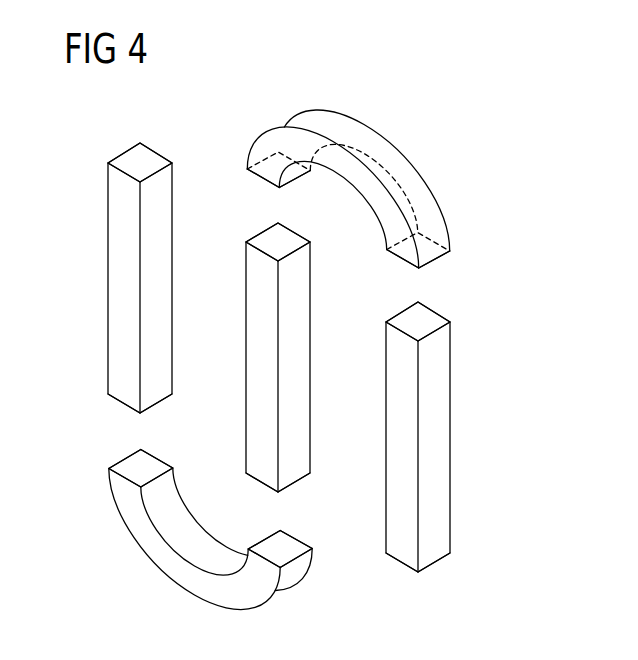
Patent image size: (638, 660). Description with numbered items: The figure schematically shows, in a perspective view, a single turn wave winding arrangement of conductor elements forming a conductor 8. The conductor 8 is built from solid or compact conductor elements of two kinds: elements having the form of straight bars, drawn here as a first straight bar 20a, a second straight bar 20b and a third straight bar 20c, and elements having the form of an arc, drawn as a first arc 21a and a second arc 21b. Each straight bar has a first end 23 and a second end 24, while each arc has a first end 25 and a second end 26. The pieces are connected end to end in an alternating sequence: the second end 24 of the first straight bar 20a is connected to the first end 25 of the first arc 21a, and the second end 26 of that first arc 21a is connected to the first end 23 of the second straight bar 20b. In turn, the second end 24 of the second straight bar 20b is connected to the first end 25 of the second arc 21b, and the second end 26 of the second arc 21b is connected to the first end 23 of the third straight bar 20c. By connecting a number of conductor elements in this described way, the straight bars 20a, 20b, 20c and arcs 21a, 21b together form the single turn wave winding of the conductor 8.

The conductor 8 is at (296, 123).
The first conductor element in form of a straight bar 20a is at (157, 272).
The second conductor element in form of a straight bar 20b is at (293, 344).
The third conductor element in form of a straight bar 20c is at (440, 433).
The first conductor element in form of an arc 21a is at (190, 549).
The second conductor element in form of an arc 21b is at (362, 142).
The first end 23 is at (135, 158).
The second end 24 is at (120, 402).
The first end 25 is at (144, 466).
The second end 26 is at (287, 543).